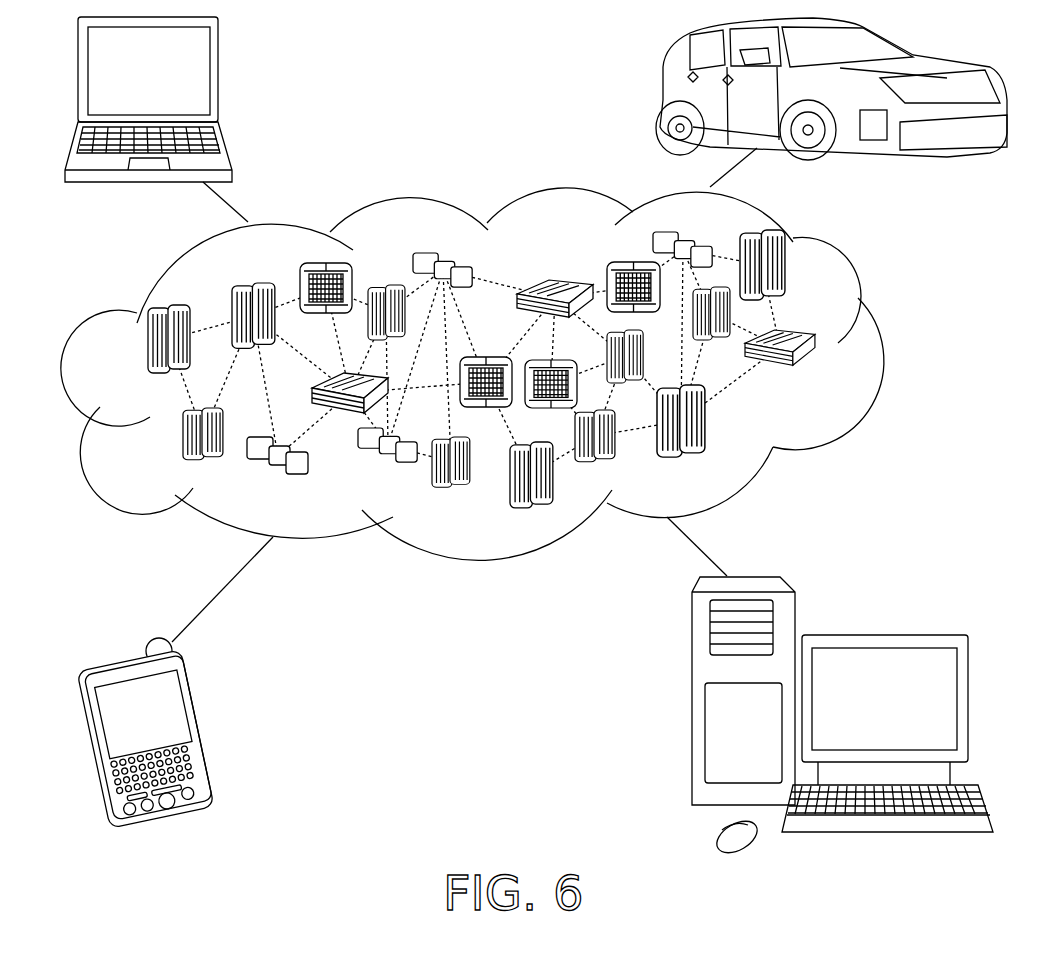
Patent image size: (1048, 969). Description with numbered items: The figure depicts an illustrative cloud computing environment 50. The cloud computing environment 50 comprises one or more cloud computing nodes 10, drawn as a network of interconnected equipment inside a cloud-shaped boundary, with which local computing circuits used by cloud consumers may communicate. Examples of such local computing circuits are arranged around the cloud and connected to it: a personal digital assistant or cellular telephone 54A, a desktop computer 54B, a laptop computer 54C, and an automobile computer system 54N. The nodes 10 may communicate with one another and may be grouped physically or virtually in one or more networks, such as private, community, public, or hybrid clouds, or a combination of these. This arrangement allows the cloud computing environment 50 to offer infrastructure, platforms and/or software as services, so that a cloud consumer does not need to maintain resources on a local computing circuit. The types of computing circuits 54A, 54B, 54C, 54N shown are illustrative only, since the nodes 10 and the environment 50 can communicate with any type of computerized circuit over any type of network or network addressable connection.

The cloud computing node 10 is at (827, 378).
The cloud computing environment 50 is at (502, 374).
The personal digital assistant (PDA) or cellular telephone 54A is at (207, 730).
The desktop computer 54B is at (880, 632).
The laptop computer 54C is at (218, 80).
The automobile computer system 54N is at (662, 95).